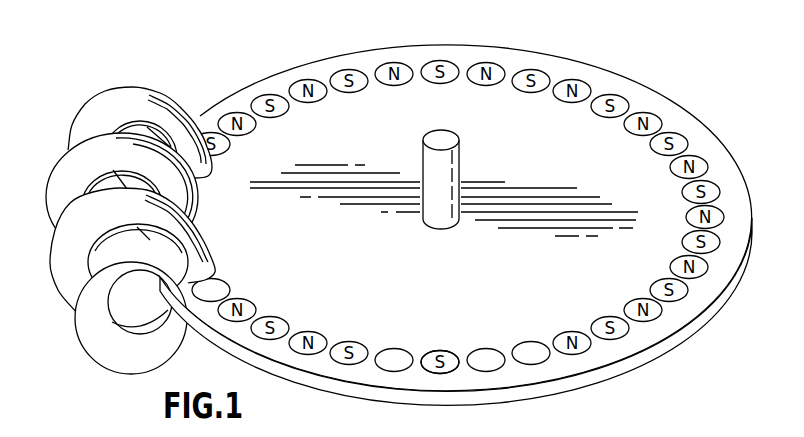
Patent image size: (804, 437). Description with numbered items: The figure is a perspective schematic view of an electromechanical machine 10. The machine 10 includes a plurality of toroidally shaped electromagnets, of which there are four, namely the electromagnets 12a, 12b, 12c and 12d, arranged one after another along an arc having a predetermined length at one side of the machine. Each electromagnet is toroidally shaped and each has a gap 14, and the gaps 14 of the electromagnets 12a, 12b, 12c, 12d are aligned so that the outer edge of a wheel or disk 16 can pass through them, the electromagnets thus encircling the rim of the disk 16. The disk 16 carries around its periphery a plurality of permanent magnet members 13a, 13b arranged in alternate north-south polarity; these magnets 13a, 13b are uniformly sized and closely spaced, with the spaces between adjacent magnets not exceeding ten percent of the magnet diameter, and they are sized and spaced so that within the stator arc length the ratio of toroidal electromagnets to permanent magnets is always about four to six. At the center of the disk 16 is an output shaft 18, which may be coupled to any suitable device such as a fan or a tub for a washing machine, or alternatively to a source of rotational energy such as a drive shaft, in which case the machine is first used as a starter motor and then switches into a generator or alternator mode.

The electromechanical machine 10 is at (655, 58).
The toroidally shaped electromagnet 12a is at (103, 366).
The toroidally shaped electromagnet 12b is at (53, 276).
The toroidally shaped electromagnet 12c is at (50, 173).
The toroidally shaped electromagnet 12d is at (116, 88).
The permanent magnet member 13a is at (395, 349).
The permanent magnet member 13b is at (441, 350).
The gap 14 is at (227, 281).
The disk 16 is at (366, 268).
The output shaft 18 is at (462, 149).